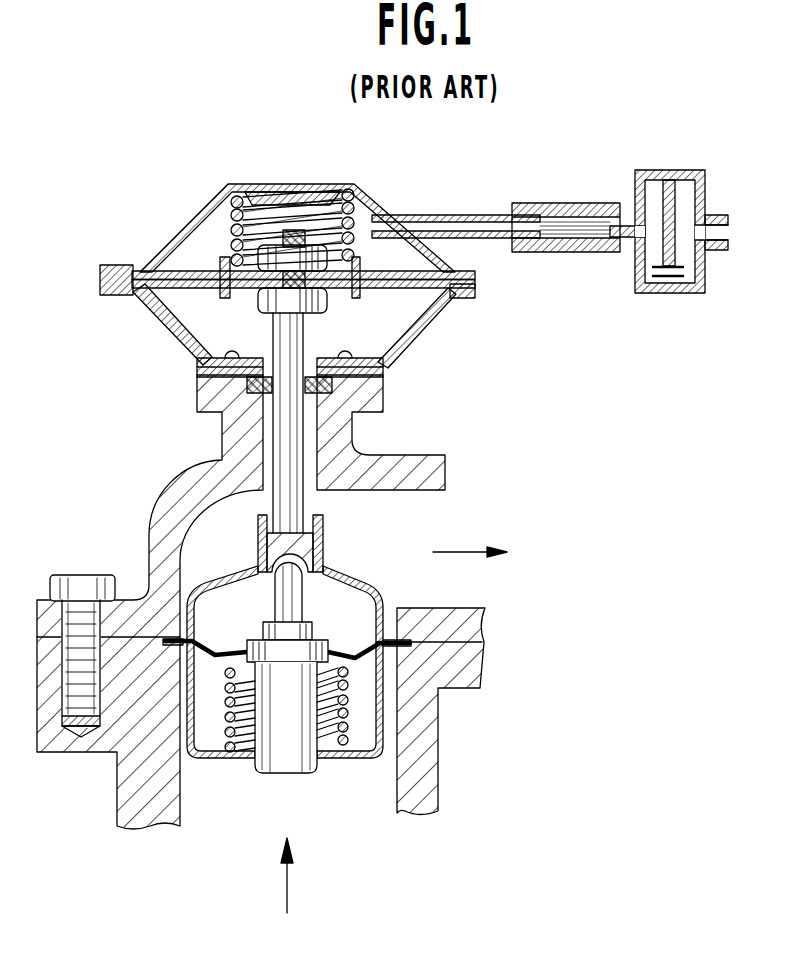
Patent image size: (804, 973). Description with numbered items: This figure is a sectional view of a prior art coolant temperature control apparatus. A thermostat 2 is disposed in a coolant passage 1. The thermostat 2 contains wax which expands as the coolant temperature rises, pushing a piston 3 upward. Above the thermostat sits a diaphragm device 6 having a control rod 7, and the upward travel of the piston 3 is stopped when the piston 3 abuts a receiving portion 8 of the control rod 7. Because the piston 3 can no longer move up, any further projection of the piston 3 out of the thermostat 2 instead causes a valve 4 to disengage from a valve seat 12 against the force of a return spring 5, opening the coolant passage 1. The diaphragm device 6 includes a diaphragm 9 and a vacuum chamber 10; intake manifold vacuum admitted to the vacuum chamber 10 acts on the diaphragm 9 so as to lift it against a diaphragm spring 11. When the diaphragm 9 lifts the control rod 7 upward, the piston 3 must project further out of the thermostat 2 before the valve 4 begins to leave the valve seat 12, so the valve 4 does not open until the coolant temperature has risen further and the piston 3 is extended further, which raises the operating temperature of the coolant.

The coolant passage 1 is at (214, 826).
The thermostat 2 is at (307, 773).
The piston 3 is at (280, 598).
The valve 4 is at (334, 660).
The return spring 5 is at (347, 701).
The diaphragm device 6 is at (150, 244).
The control rod 7 is at (283, 445).
The receiving portion 8 is at (273, 548).
The diaphragm 9 is at (372, 272).
The vacuum chamber 10 is at (407, 266).
The diaphragm spring 11 is at (233, 230).
The valve seat 12 is at (370, 625).